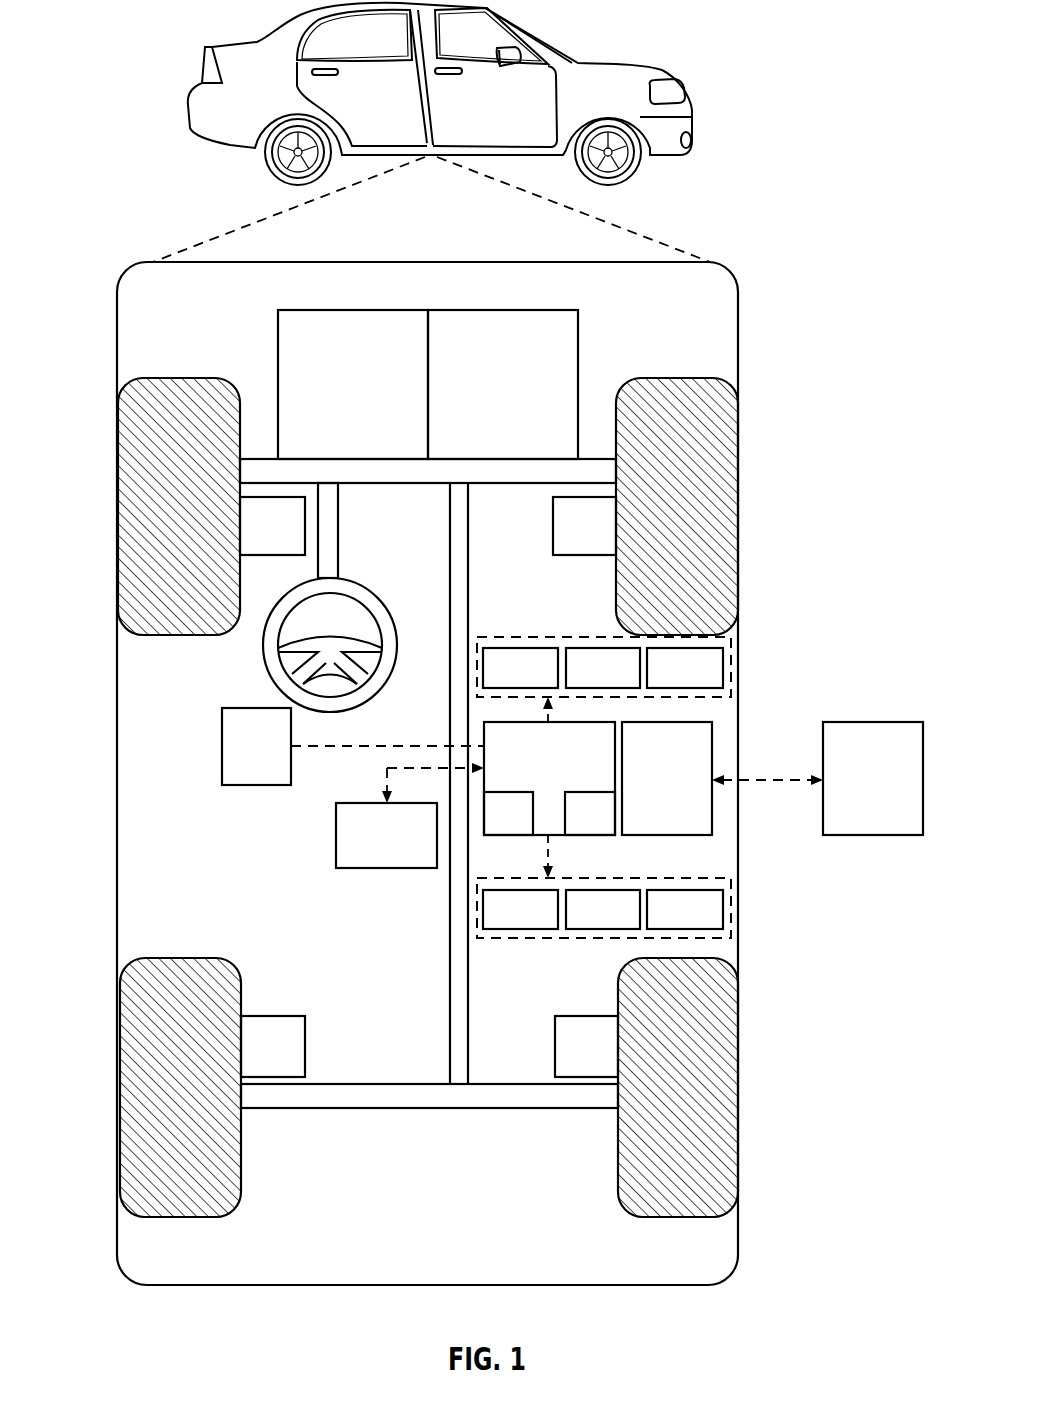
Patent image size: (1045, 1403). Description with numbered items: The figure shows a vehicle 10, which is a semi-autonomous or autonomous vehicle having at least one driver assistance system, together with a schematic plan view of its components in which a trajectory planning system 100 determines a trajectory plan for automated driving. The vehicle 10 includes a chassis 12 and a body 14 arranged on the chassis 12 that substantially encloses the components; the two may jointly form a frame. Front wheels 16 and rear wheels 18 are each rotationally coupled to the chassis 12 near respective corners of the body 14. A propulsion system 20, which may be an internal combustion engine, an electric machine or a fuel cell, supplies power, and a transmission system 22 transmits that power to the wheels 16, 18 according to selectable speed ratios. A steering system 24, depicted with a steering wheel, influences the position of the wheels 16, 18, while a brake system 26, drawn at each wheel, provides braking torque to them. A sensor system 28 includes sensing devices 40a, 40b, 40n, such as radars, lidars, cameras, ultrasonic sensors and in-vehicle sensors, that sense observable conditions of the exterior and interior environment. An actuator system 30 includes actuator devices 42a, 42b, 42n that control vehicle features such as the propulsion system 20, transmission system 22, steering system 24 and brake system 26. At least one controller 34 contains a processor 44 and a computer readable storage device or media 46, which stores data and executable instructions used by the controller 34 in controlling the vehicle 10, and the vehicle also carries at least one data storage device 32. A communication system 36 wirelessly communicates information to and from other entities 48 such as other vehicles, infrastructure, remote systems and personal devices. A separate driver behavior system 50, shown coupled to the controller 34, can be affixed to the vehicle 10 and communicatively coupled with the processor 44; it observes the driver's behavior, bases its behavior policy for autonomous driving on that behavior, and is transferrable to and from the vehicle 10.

The vehicle 10 is at (200, 82).
The trajectory planning system 100 is at (765, 279).
The chassis 12 is at (450, 975).
The body 14 is at (117, 733).
The front wheels 16 is at (178, 378).
The rear wheels 18 is at (181, 1217).
The propulsion system 20 is at (339, 398).
The transmission system 22 is at (489, 398).
The steering system 24 is at (352, 554).
The brake system 26 is at (258, 539).
The sensor system 28 is at (563, 636).
The actuator system 30 is at (567, 938).
The data storage device 32 is at (373, 852).
The controller 34 is at (535, 772).
The communication system 36 is at (654, 794).
The sensing device 40a is at (500, 682).
The sensing device 40b is at (583, 682).
The sensing device 40n is at (665, 682).
The actuator device 42a is at (500, 924).
The actuator device 42b is at (583, 924).
The actuator device 42n is at (665, 924).
The processor 44 is at (494, 828).
The computer readable storage device or media 46 is at (576, 828).
The other entities 48 is at (859, 794).
The driver behavior system 50 is at (257, 708).